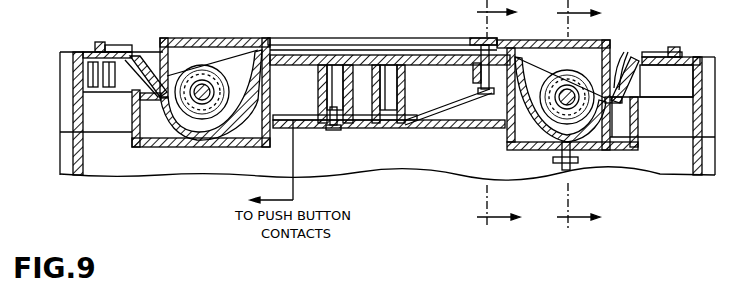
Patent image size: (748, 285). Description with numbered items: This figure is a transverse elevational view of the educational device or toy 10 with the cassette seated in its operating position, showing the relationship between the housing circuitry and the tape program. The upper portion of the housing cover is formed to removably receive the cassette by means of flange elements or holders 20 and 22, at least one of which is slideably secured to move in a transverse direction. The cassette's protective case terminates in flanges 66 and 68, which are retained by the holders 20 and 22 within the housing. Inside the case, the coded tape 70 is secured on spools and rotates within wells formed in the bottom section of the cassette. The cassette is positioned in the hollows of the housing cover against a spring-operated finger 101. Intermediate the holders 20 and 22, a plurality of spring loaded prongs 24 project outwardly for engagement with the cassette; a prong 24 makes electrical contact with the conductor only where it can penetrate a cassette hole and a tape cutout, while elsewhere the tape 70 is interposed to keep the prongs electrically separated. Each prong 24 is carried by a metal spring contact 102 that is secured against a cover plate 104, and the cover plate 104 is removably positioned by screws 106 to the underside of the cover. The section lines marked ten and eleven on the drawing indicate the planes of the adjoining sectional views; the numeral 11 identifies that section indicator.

The educational device or toy 10 is at (592, 114).
The section line 11- 11 is at (512, 114).
The holder 20 is at (633, 66).
The holder 22 is at (127, 86).
The spring loaded prong 24 is at (484, 45).
The flange 66 is at (625, 70).
The flange 68 is at (160, 58).
The coded tape 70 is at (233, 56).
The spring-operated finger 101 is at (559, 157).
The metal spring contact 102 is at (446, 108).
The cover plate 104 is at (434, 128).
The screw 106 is at (334, 131).